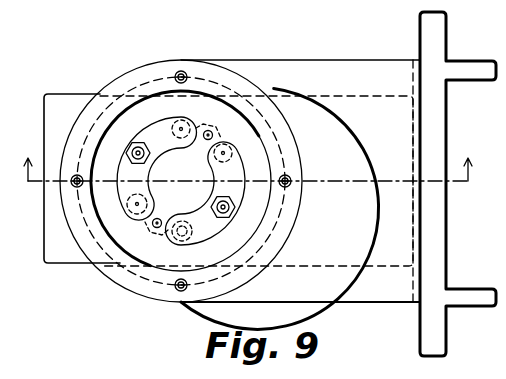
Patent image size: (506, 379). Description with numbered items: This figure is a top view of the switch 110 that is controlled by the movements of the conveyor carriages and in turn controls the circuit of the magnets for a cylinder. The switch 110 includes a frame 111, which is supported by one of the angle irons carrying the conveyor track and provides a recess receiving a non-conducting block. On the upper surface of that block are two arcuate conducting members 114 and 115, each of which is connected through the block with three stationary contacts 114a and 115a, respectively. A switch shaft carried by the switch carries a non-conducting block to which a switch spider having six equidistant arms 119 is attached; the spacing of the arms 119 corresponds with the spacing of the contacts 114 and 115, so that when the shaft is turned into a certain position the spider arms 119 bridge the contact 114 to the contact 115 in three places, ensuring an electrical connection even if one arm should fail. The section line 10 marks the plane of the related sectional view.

The section line 10- 10 is at (247, 159).
The switch 110 is at (106, 55).
The frame 111 is at (501, 252).
The arcuate conducting member 114 is at (144, 134).
The stationary contacts 114a is at (130, 151).
The arcuate conducting member 115 is at (234, 207).
The stationary contacts 115a is at (230, 153).
The switch spider arms 119 is at (213, 134).